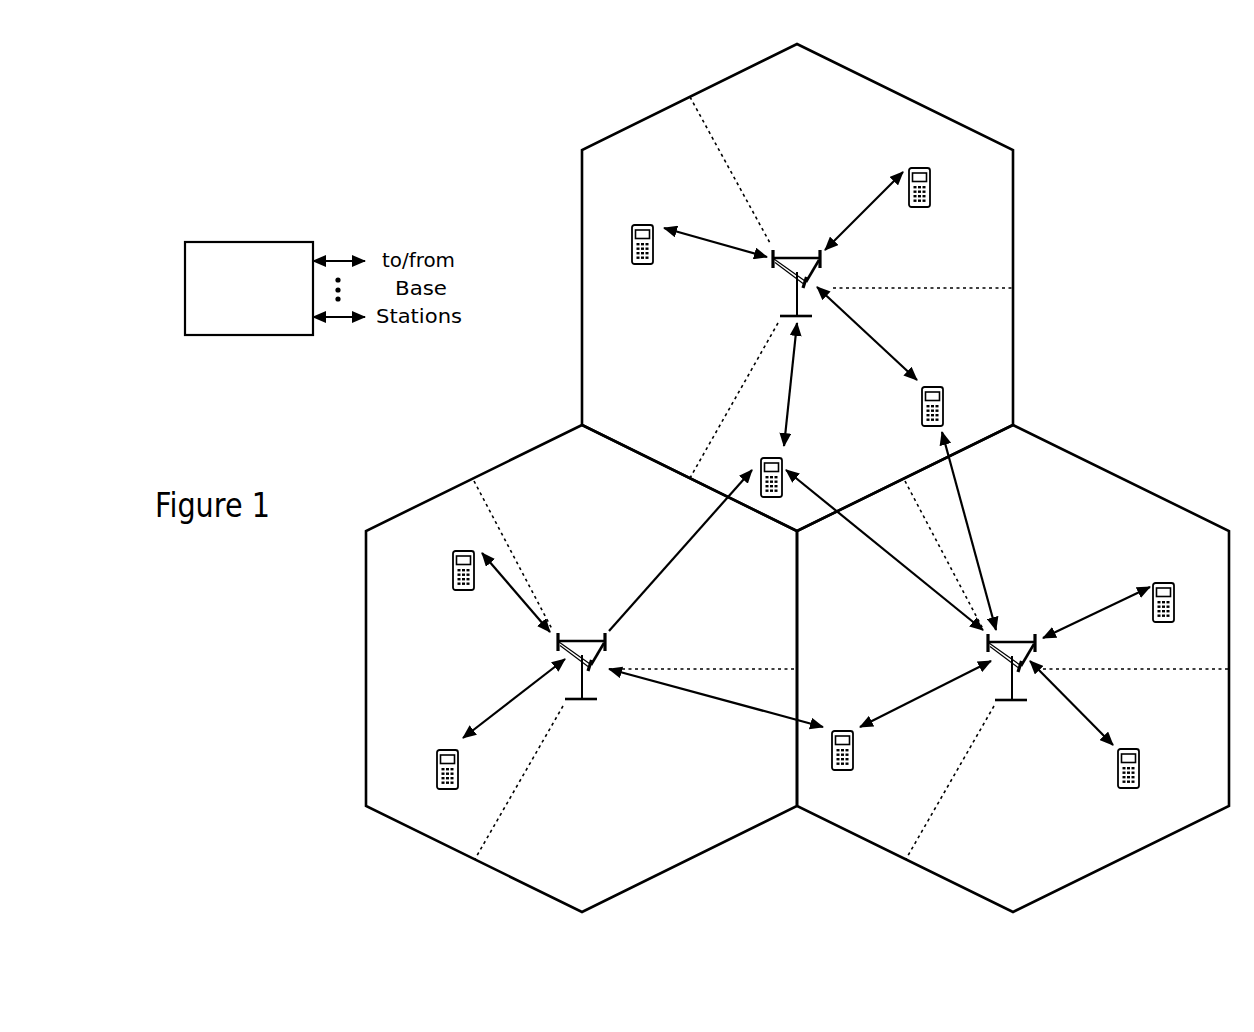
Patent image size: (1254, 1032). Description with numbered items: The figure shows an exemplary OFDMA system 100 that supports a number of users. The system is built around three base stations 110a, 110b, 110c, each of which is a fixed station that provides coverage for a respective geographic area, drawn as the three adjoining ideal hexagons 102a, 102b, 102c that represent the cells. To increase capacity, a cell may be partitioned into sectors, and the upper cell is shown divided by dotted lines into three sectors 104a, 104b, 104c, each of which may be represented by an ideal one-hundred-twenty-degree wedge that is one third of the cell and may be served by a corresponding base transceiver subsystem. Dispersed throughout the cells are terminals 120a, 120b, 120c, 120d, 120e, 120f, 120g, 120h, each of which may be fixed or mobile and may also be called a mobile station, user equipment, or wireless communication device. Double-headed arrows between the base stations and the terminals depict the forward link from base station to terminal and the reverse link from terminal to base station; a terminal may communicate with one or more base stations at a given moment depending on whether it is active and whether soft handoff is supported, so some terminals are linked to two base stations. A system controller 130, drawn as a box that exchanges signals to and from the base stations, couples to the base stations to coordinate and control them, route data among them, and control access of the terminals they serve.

The OFDMA system 100 is at (1176, 76).
The geographic area 102a is at (905, 96).
The geographic area 102b is at (450, 488).
The geographic area 102c is at (1122, 479).
The sector 104a is at (818, 78).
The sector 104b is at (630, 420).
The sector 104c is at (1006, 420).
The base station 110a is at (798, 256).
The base station 110b is at (583, 639).
The base station 110c is at (1018, 640).
The terminal 120a is at (922, 168).
The terminal 120b is at (645, 225).
The terminal 120c is at (775, 458).
The terminal 120d is at (935, 387).
The terminal 120e is at (466, 551).
The terminal 120f is at (450, 750).
The terminal 120g is at (845, 731).
The terminal 120h is at (1166, 583).
The system controller 130 is at (242, 242).